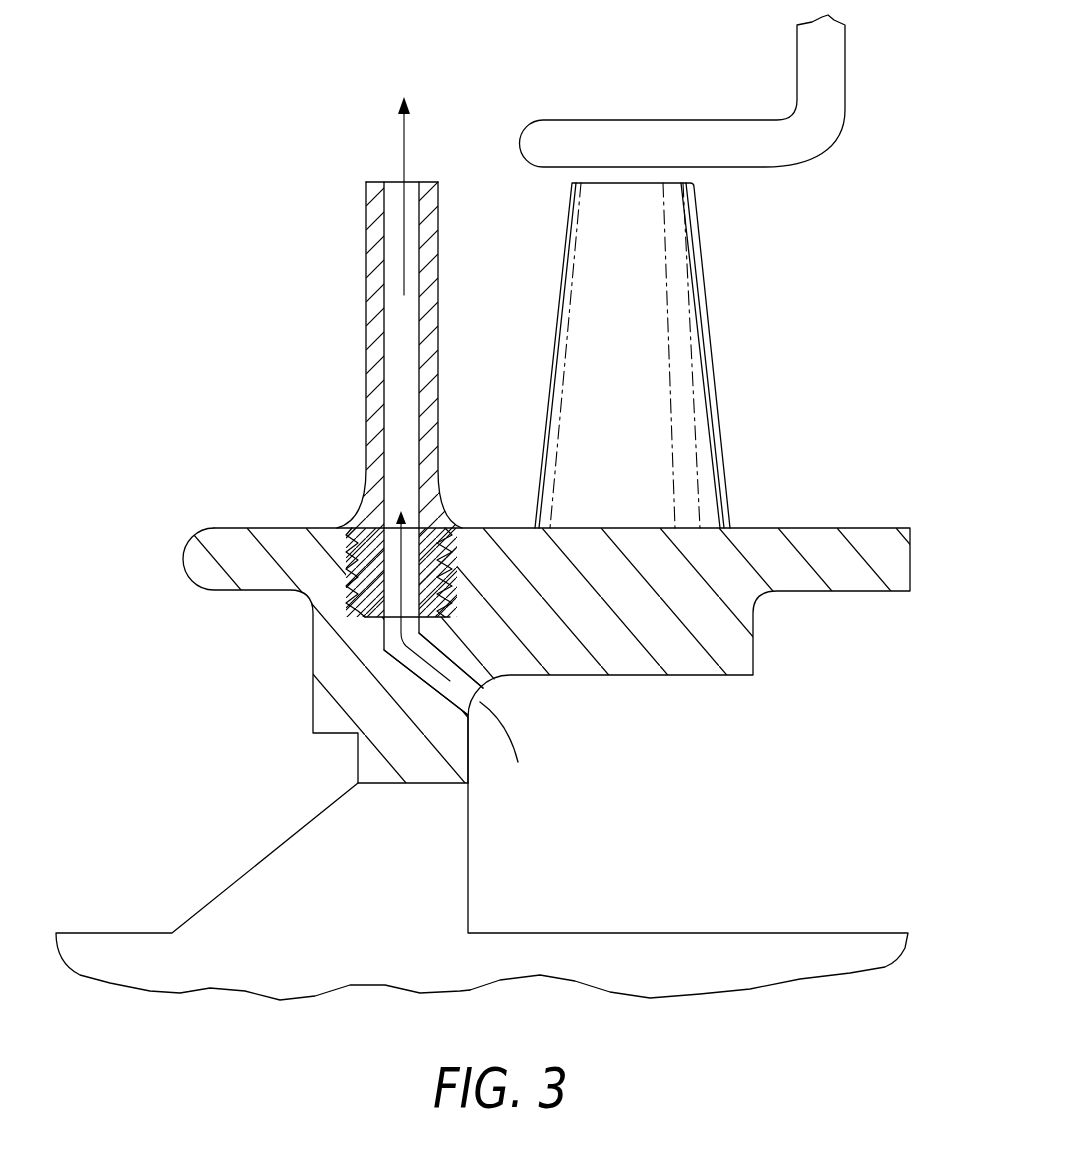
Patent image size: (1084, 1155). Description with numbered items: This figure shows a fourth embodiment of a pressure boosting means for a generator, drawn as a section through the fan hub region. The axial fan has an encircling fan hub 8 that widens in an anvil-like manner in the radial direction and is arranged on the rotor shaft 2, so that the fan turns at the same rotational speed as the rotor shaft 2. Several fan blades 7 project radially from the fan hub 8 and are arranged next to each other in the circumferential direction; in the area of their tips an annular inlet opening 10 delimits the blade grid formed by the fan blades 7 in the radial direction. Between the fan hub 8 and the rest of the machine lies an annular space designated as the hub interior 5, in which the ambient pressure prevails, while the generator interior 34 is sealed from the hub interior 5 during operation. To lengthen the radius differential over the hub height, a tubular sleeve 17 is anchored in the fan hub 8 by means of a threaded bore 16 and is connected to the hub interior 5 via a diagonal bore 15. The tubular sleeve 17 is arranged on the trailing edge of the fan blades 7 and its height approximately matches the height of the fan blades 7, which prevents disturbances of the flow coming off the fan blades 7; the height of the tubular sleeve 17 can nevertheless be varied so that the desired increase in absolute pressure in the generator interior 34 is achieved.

The rotor shaft 2 is at (358, 915).
The hub interior 5 is at (688, 820).
The fan blades 7 is at (695, 352).
The fan hub 8 is at (325, 697).
The annular inlet opening 10 is at (633, 132).
The diagonal bore 15 is at (450, 670).
The threaded bore 16 is at (352, 556).
The tubular sleeve 17 is at (368, 322).
The generator interior 34 is at (322, 162).